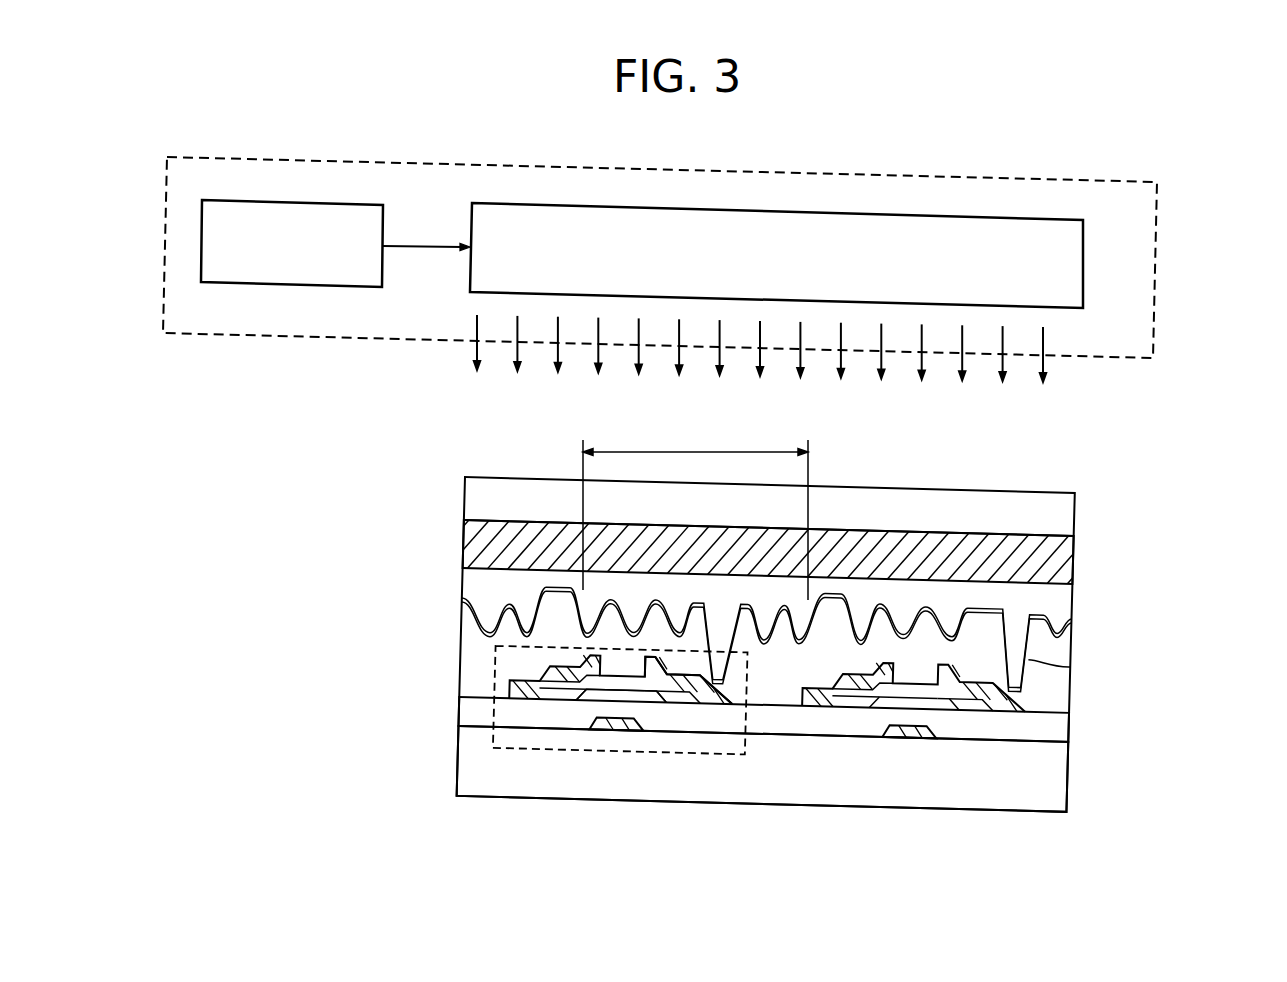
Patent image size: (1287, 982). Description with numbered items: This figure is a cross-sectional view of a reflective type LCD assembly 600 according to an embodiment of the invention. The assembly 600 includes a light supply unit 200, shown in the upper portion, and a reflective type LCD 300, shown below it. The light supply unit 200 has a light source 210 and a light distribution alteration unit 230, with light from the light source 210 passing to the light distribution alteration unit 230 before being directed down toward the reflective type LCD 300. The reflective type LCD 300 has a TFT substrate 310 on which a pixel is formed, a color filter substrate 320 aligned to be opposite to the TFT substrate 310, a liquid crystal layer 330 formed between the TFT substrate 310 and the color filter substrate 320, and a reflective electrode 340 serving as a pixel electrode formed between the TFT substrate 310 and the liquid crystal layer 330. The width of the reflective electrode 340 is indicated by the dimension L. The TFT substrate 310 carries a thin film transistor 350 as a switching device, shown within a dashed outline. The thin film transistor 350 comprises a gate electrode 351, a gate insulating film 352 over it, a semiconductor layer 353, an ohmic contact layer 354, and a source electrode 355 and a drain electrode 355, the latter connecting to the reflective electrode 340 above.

The reflective type LCD assembly 600 is at (1131, 129).
The light supply unit 200 is at (705, 250).
The light source 210 is at (292, 286).
The light distribution alteration unit 230 is at (978, 217).
The reflective type LCD 300 is at (1047, 833).
The TFT substrate 310 is at (1058, 778).
The color filter substrate 320 is at (1067, 513).
The liquid crystal layer 330 is at (1075, 553).
The reflective electrode 340 is at (1072, 667).
The thin film transistor 350 is at (600, 776).
The gate electrode 351 is at (620, 727).
The gate insulating film 352 is at (547, 722).
The semiconductor layer 353 is at (672, 705).
The ohmic contact layer 354 is at (690, 705).
The source electrode and drain electrode 355 is at (515, 700).